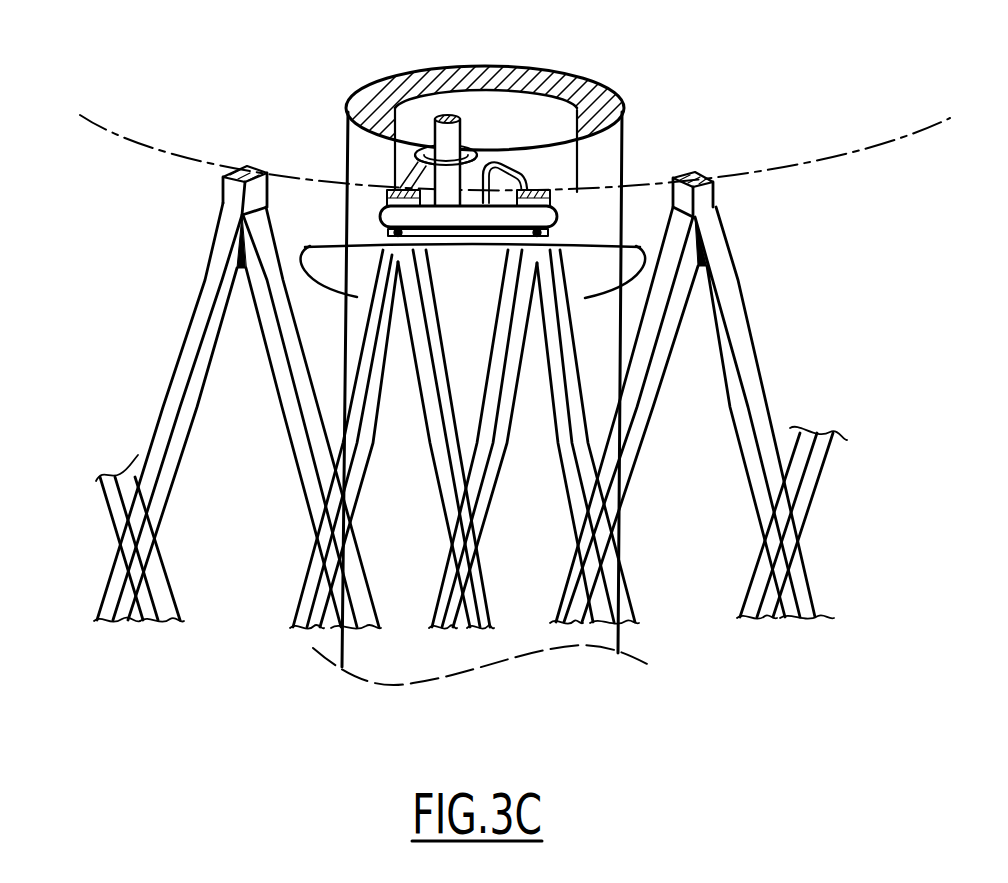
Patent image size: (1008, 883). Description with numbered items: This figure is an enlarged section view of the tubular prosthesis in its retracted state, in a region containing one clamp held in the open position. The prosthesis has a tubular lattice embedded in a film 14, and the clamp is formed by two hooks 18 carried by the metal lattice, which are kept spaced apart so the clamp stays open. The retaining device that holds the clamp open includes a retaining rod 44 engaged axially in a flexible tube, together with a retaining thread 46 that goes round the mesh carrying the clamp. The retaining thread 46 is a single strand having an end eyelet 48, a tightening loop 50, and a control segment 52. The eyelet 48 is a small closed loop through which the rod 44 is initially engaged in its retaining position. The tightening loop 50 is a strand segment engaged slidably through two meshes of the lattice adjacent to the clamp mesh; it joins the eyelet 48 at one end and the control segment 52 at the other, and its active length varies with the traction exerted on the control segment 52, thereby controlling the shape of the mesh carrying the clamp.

The film 14 is at (752, 387).
The hooks 18 is at (356, 242).
The retaining rod 44 is at (447, 138).
The retaining thread 46 is at (517, 174).
The eyelet 48 is at (410, 104).
The tightening loop 50 is at (448, 213).
The control segment 52 is at (490, 205).